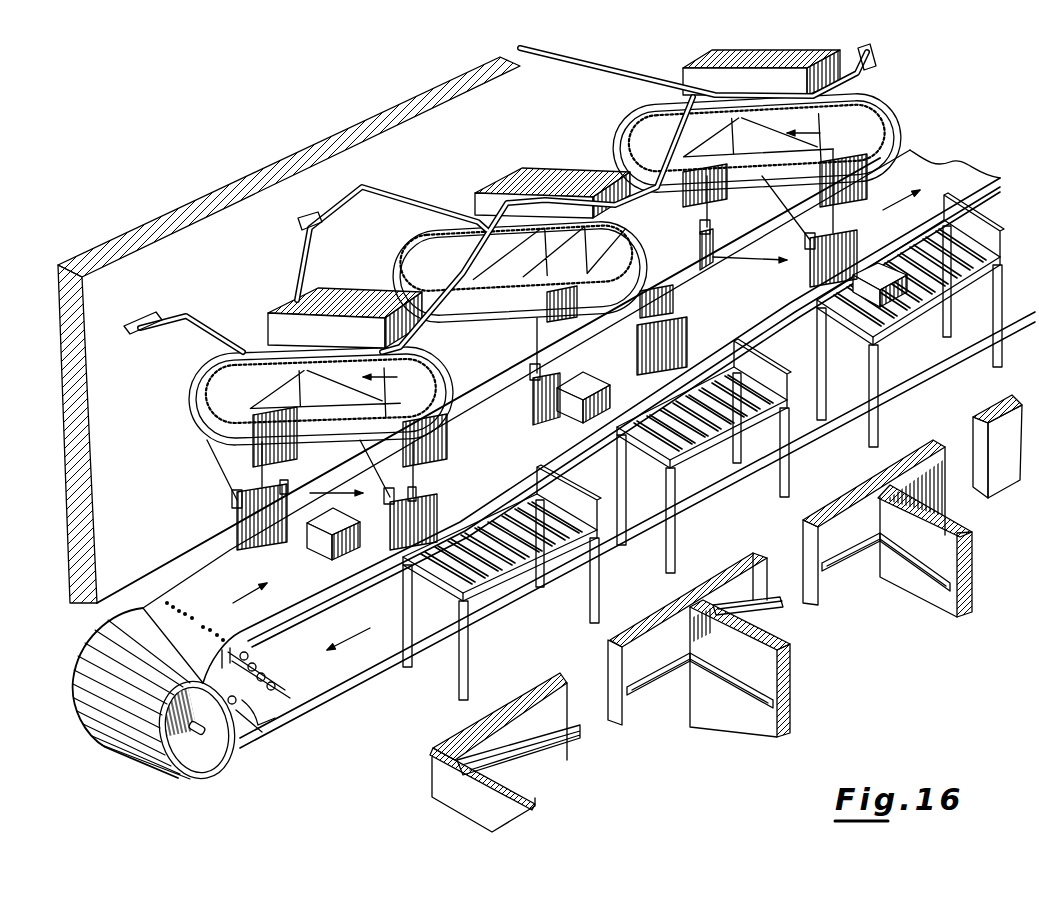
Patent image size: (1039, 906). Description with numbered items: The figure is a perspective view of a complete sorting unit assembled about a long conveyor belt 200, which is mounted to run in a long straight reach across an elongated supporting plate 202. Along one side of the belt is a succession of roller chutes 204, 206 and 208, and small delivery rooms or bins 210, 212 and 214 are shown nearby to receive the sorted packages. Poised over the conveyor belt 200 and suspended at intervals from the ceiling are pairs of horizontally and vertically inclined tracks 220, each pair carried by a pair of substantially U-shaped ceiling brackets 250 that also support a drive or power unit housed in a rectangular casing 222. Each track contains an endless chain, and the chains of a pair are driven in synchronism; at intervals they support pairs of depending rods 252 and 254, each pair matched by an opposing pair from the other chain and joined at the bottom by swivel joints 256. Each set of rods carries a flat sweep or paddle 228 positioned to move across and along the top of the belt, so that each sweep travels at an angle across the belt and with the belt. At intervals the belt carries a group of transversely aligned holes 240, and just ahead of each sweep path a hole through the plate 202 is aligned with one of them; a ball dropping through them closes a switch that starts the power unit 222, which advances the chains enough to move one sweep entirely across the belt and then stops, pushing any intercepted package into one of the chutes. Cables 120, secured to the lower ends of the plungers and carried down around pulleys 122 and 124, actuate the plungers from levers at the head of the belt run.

The cables 120 is at (285, 703).
The pulley 122 is at (252, 742).
The pulley 124 is at (272, 718).
The conveyor belt 200 is at (118, 633).
The supporting plate 202 is at (352, 572).
The roller chute 204 is at (505, 572).
The roller chute 206 is at (705, 443).
The roller chute 208 is at (910, 322).
The delivery room 210 is at (699, 650).
The delivery room 212 is at (887, 536).
The delivery room 214 is at (999, 464).
The inclined track 220 is at (322, 406).
The power unit 222 is at (386, 292).
The sweep 228 is at (247, 532).
The holes 240 is at (180, 612).
The ceiling bracket 250 is at (176, 336).
The depending rod 252 is at (216, 457).
The depending rod 254 is at (243, 470).
The swivel joint 256 is at (232, 497).